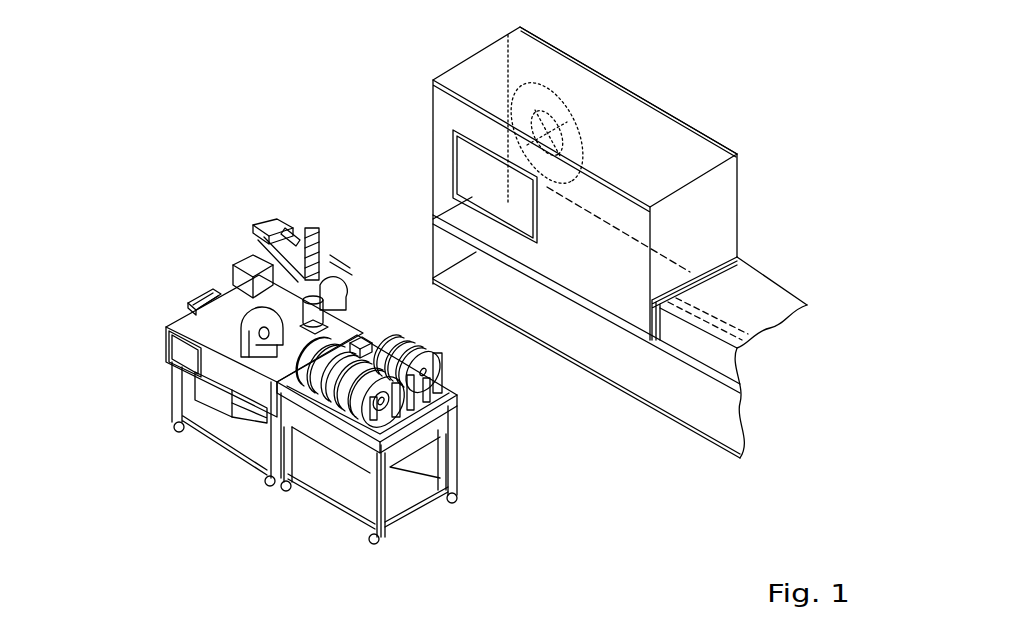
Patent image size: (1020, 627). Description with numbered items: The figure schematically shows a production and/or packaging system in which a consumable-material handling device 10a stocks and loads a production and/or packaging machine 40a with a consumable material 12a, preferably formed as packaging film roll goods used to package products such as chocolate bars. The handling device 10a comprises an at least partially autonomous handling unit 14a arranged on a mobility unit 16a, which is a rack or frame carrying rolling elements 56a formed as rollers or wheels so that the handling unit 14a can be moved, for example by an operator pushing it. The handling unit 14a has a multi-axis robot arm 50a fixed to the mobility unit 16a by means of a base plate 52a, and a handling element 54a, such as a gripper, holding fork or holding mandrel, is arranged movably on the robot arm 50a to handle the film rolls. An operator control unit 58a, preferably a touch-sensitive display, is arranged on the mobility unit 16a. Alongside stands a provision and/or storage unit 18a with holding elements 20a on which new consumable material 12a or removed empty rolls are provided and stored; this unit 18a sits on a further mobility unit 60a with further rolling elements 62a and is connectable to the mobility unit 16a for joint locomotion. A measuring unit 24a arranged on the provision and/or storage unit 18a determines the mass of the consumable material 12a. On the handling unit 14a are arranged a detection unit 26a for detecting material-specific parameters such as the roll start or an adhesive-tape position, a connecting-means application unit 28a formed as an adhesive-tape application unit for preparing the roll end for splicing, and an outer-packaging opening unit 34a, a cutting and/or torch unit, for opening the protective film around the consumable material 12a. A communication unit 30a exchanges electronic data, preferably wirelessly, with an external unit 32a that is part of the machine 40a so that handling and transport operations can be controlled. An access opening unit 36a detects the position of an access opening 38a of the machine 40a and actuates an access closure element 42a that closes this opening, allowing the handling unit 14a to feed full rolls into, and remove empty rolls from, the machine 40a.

The consumable-material handling device 10a is at (223, 147).
The consumable material 12a is at (233, 330).
The handling unit 14a is at (222, 235).
The mobility unit 16a is at (160, 392).
The provision and/or storage unit 18a is at (463, 383).
The holding element 20a is at (376, 456).
The measuring unit 24a is at (332, 447).
The detection unit 26a is at (318, 262).
The connecting-means application unit 28a is at (272, 226).
The communication unit 30a is at (237, 367).
The external unit 32a is at (533, 33).
The outer-packaging opening unit 34a is at (250, 236).
The access opening unit 36a is at (325, 243).
The access opening 38a is at (483, 160).
The production and/or packaging machine 40a is at (745, 125).
The access closure element 42a is at (530, 192).
The robot arm 50a is at (290, 233).
The base plate 52a is at (335, 320).
The handling element 54a is at (325, 262).
The rolling element 56a is at (183, 433).
The operator control unit 58a is at (157, 345).
The further mobility unit 60a is at (473, 443).
The further rolling element 62a is at (457, 500).